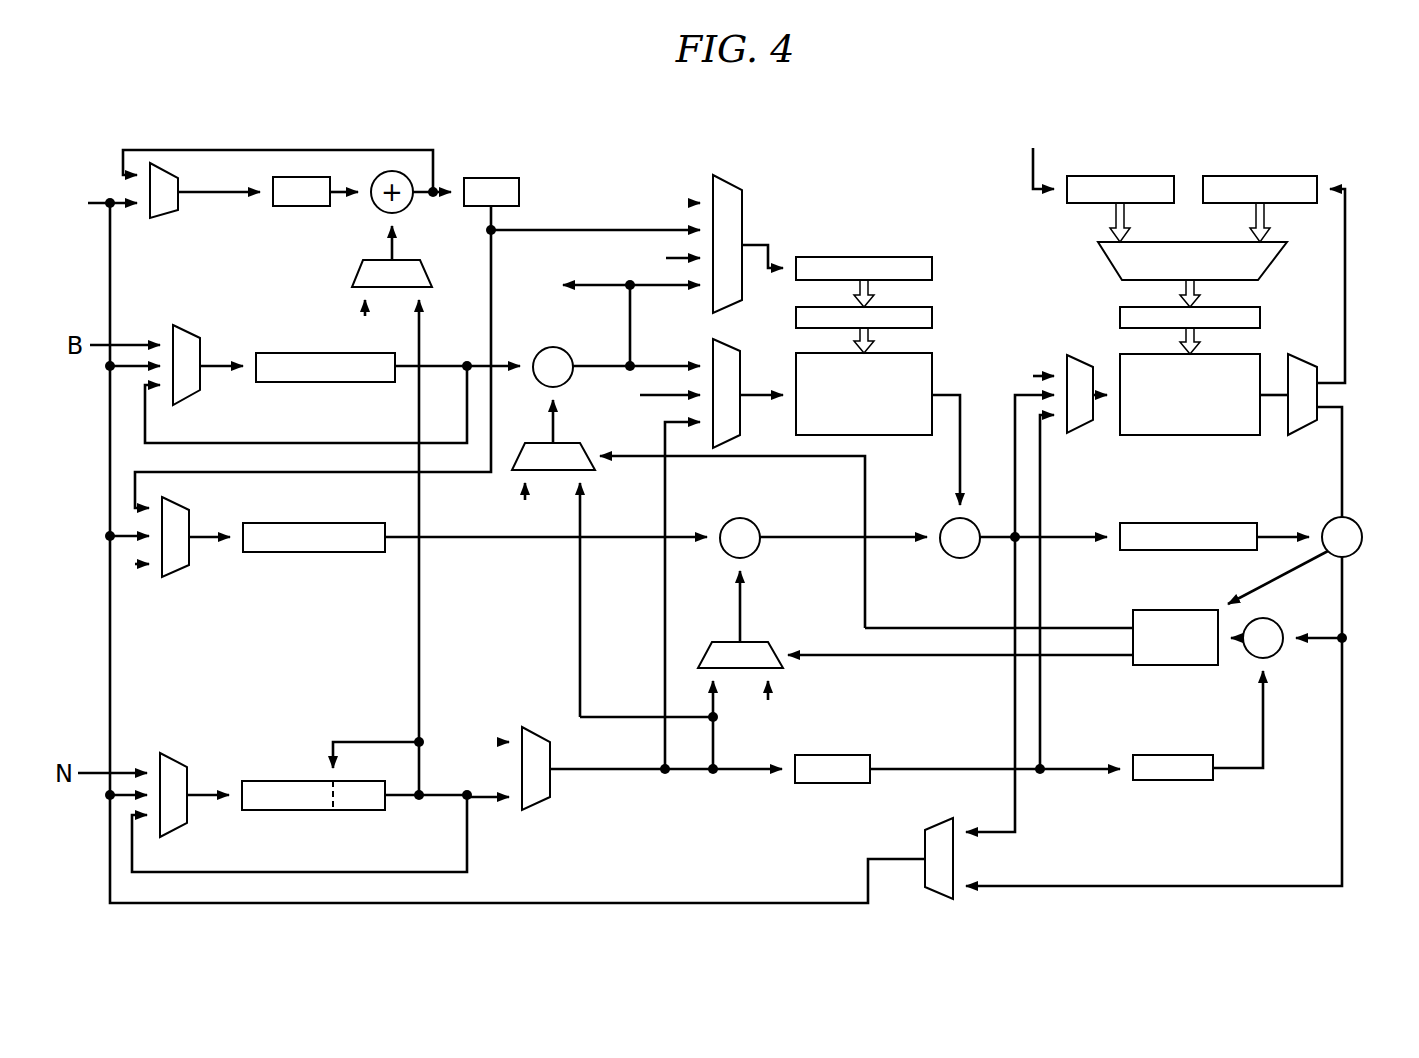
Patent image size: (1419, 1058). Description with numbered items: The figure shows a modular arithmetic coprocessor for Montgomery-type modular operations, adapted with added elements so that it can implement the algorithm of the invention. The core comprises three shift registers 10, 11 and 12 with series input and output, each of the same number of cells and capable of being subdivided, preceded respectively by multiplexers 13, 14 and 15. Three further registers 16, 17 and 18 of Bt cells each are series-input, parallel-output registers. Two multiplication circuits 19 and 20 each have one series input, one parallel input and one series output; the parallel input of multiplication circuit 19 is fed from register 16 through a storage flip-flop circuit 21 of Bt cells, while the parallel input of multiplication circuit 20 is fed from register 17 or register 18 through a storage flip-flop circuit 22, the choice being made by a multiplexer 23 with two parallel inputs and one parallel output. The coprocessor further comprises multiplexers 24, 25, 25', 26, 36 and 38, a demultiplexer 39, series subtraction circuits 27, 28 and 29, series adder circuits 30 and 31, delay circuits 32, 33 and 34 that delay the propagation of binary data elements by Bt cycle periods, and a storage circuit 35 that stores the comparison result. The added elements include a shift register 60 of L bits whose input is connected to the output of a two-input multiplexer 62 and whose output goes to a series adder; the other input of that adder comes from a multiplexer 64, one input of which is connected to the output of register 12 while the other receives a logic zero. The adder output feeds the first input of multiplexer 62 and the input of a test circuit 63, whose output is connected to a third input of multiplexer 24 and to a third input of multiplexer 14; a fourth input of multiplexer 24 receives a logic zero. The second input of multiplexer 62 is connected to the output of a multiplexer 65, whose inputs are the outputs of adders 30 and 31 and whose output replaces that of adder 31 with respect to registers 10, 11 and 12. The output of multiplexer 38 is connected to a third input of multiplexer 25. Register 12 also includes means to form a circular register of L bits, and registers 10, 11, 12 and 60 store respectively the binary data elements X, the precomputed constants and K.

The shift register 10 is at (280, 353).
The shift register 11 is at (315, 552).
The shift register 12 is at (278, 781).
The multiplexer 13 is at (185, 325).
The multiplexer 14 is at (175, 577).
The multiplexer 15 is at (175, 753).
The register 16 is at (932, 270).
The register 17 is at (1118, 176).
The register 18 is at (1260, 176).
The multiplication circuit 19 is at (905, 435).
The multiplication circuit 20 is at (1190, 435).
The storage flip-flop circuit 21 is at (932, 318).
The storage flip-flop circuit 22 is at (1120, 318).
The multiplexer 23 is at (1100, 265).
The multiplexer 24 is at (735, 178).
The multiplexer 25 is at (700, 544).
The multiplexer 25' is at (856, 670).
The multiplexer 26 is at (1080, 433).
The series subtraction circuit 27 is at (570, 352).
The series subtraction circuit 28 is at (756, 523).
The series subtraction circuit 29 is at (1280, 623).
The series adder circuit 30 is at (960, 558).
The series adder circuit 31 is at (1357, 522).
The delay circuit 32 is at (835, 755).
The delay circuit 33 is at (1173, 780).
The delay circuit 34 is at (1190, 550).
The storage circuit 35 is at (1175, 665).
The multiplexer 36 is at (572, 443).
The multiplexer 38 is at (532, 810).
The demultiplexer 39 is at (1300, 435).
The shift register 60 is at (300, 206).
The multiplexer 62 is at (160, 218).
The test circuit 63 is at (487, 178).
The multiplexer 64 is at (410, 260).
The multiplexer 65 is at (930, 822).